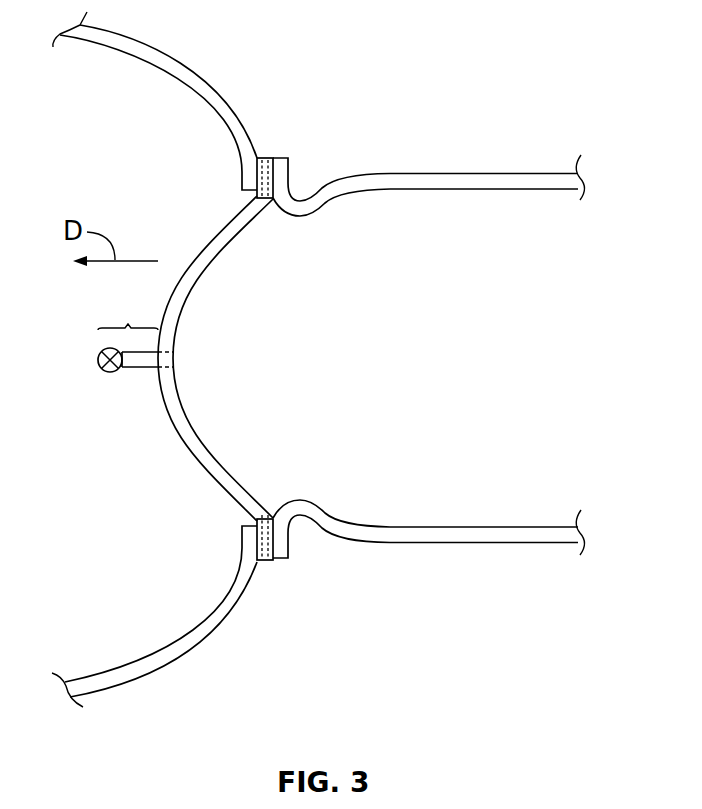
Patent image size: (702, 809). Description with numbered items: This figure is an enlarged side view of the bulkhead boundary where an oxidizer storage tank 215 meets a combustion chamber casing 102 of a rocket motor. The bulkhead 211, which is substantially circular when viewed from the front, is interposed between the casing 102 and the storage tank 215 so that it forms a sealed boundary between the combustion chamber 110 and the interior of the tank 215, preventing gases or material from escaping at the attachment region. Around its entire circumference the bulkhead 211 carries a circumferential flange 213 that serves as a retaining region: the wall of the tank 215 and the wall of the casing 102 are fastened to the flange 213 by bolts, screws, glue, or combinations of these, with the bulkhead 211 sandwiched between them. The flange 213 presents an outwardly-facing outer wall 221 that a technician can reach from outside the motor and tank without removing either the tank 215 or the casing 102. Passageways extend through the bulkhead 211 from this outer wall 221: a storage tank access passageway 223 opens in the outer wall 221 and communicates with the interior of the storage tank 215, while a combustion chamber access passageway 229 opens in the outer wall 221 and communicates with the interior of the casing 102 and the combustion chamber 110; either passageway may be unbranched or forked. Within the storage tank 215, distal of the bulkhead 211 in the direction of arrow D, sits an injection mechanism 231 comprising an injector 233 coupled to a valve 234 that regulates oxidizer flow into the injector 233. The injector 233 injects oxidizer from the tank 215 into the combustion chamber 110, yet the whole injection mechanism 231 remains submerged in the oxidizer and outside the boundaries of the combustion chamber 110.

The casing 102 is at (487, 173).
The combustion chamber 110 is at (455, 368).
The bulkhead 211 is at (188, 298).
The circumferential flange 213 is at (275, 172).
The storage tank 215 is at (168, 50).
The outer wall 221 is at (268, 157).
The storage tank access passageway 223 is at (268, 200).
The combustion chamber access passageway 229 is at (253, 512).
The injection mechanism 231 is at (128, 313).
The injector 233 is at (138, 370).
The valve 234 is at (108, 373).